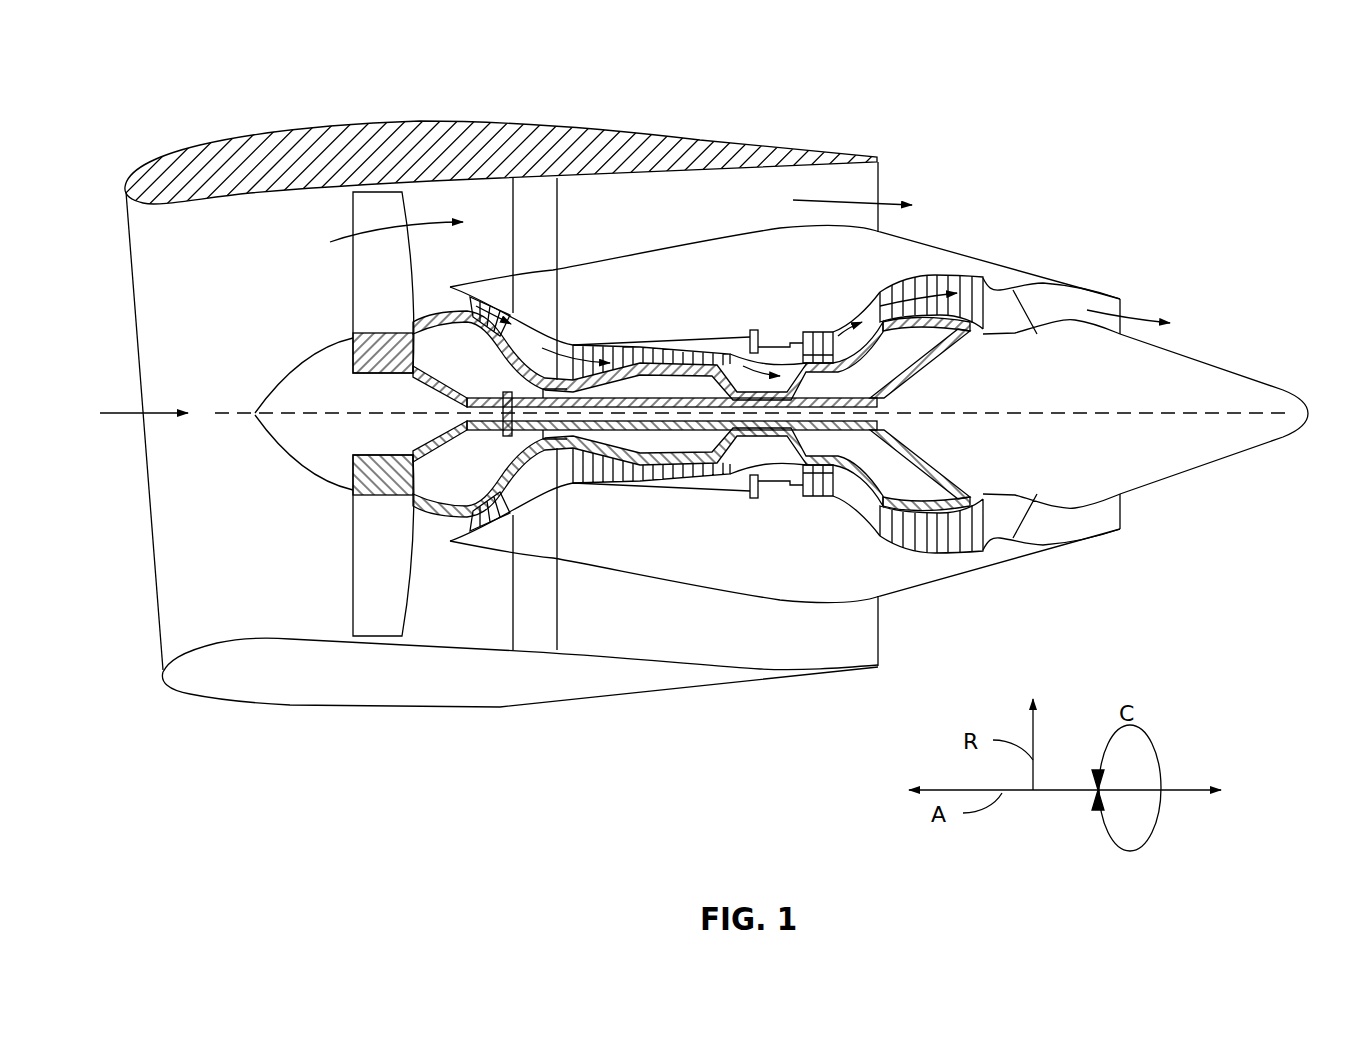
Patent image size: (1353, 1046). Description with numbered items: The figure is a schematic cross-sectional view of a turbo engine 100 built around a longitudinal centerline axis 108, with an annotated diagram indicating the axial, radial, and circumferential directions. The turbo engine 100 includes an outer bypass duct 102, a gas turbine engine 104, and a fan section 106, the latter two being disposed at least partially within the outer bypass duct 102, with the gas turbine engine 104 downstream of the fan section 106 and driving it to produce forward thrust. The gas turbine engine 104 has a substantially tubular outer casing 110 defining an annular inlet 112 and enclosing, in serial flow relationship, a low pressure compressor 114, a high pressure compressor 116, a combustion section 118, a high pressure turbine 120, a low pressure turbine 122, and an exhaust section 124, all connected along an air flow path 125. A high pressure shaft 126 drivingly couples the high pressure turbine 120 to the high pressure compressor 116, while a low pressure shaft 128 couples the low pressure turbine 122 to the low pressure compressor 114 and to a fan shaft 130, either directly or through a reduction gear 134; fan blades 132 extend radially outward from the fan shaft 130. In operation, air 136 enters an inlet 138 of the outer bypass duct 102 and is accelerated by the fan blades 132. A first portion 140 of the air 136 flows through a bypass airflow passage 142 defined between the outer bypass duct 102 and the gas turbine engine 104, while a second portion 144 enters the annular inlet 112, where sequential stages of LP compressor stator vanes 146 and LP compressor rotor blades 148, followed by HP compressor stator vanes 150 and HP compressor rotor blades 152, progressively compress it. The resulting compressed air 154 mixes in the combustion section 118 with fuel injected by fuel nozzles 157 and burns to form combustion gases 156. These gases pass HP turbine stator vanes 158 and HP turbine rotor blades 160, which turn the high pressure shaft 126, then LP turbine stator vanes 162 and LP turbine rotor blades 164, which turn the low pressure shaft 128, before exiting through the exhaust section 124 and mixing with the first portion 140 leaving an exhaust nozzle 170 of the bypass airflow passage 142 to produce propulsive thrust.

The turbo engine 100 is at (1102, 115).
The outer bypass duct 102 is at (413, 123).
The gas turbine engine 104 is at (937, 230).
The fan section 106 is at (267, 268).
The centerline axis 108 is at (1040, 413).
The outer casing 110 is at (717, 587).
The annular inlet 112 is at (457, 530).
The low pressure compressor 114 is at (506, 514).
The high pressure compressor 116 is at (596, 490).
The combustion section 118 is at (766, 493).
The high pressure turbine 120 is at (841, 480).
The low pressure turbine 122 is at (972, 558).
The exhaust section 124 is at (1125, 304).
The air flow path 125 is at (860, 507).
The high pressure shaft 126 is at (813, 368).
The low pressure shaft 128 is at (518, 392).
The fan shaft 130 is at (410, 380).
The fan blades 132 is at (353, 560).
The reduction gear 134 is at (525, 470).
The air 136 is at (155, 410).
The inlet 138 is at (160, 638).
The first portion of the air 140 is at (827, 201).
The bypass airflow passage 142 is at (696, 198).
The second portion of the air 144 is at (435, 296).
The LP compressor stator vanes 146 is at (477, 533).
The LP compressor rotor blades 148 is at (488, 533).
The HP compressor stator vanes 150 is at (703, 480).
The HP compressor rotor blades 152 is at (700, 480).
The compressed air 154 is at (752, 362).
The combustion gases 156 is at (935, 276).
The fuel nozzles 157 is at (753, 330).
The HP turbine stator vanes 158 is at (807, 485).
The HP turbine rotor blades 160 is at (818, 482).
The LP turbine stator vanes 162 is at (880, 292).
The LP turbine rotor blades 164 is at (900, 290).
The exhaust nozzle 170 is at (873, 157).